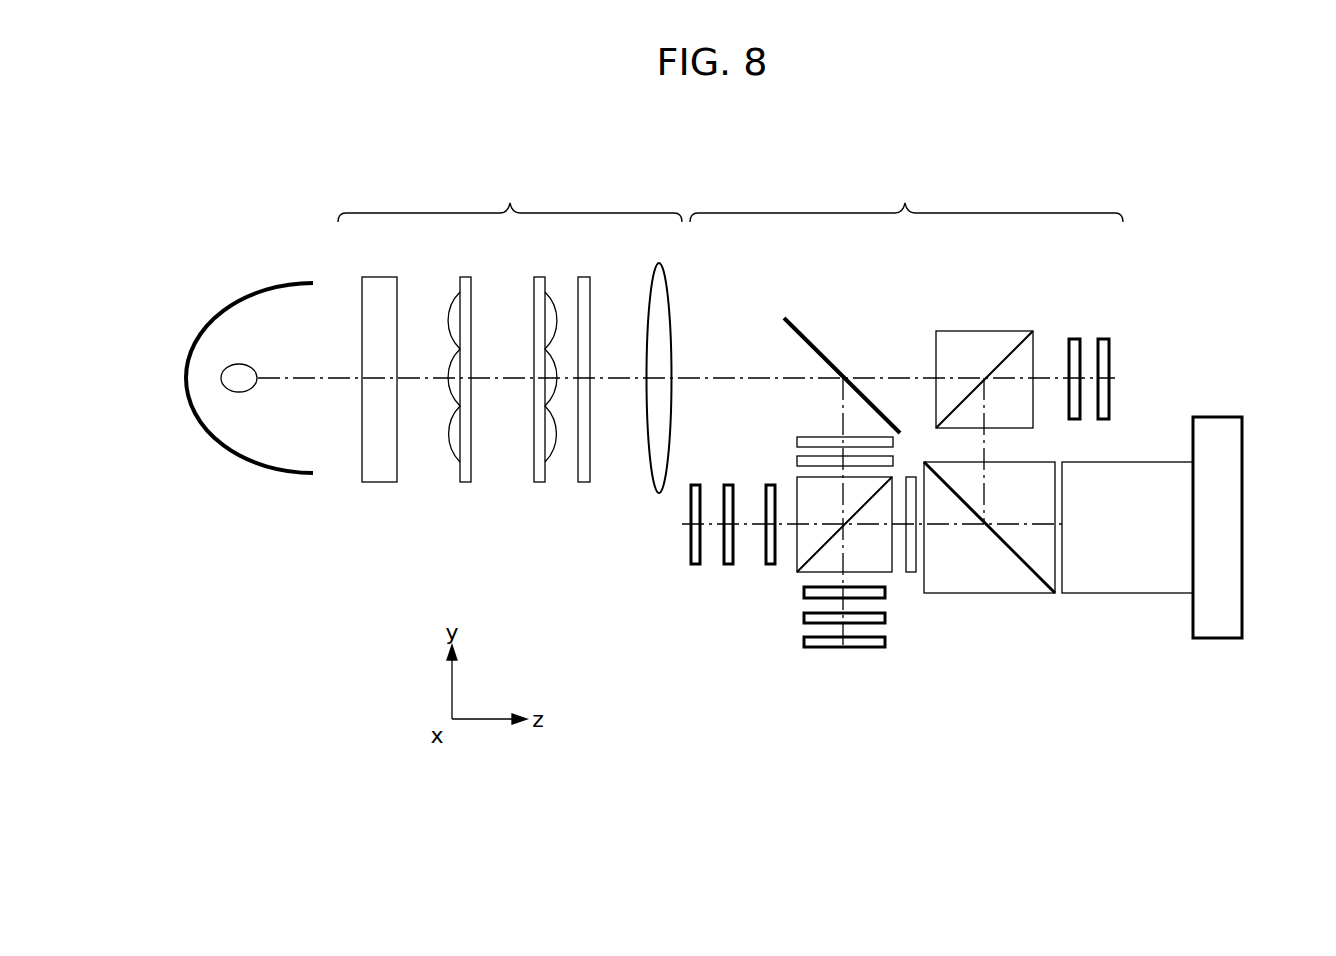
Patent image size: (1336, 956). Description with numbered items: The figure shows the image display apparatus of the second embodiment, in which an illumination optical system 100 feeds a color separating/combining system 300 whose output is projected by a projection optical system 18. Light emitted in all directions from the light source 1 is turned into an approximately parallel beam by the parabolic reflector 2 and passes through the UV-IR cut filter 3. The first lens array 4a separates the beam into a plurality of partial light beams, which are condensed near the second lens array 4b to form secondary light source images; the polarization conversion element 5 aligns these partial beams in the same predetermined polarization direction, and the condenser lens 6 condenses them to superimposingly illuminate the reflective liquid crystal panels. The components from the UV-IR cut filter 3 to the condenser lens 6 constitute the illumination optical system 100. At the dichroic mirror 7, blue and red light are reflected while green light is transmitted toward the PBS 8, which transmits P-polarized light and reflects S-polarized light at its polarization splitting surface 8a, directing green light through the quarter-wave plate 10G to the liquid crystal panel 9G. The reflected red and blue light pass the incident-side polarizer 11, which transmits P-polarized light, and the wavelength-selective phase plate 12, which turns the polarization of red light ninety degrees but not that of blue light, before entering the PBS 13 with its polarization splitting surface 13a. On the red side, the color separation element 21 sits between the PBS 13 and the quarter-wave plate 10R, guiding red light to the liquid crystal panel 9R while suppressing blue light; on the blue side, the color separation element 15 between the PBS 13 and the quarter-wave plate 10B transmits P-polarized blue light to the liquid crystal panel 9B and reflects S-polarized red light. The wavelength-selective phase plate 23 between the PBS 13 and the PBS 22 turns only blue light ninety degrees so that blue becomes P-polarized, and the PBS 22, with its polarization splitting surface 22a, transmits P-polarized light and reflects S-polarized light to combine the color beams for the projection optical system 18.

The light source 1 is at (218, 376).
The parabolic reflector 2 is at (263, 468).
The UV-IR cut filter 3 is at (380, 470).
The first lens array 4a is at (463, 470).
The second lens array 4b is at (537, 470).
The polarization conversion element 5 is at (585, 470).
The condenser lens 6 is at (655, 450).
The dichroic mirror 7 is at (811, 338).
The PBS 8 is at (1004, 330).
The polarization splitting surface 8a is at (990, 368).
The liquid crystal panel for red light 9R is at (689, 540).
The liquid crystal panel for green light 9G is at (1112, 398).
The liquid crystal panel for blue light 9B is at (857, 647).
The quarter-wave plate for red light 10R is at (726, 557).
The quarter-wave plate for green light 10G is at (1073, 338).
The quarter-wave plate for blue light 10B is at (876, 617).
The incident-side polarizer 11 is at (813, 440).
The wavelength-selective phase plate 12 is at (805, 461).
The PBS 13 is at (795, 490).
The polarization splitting surface 13a is at (810, 553).
The color separation element 15 is at (807, 597).
The projection optical system 18 is at (1132, 595).
The color separation element 21 is at (762, 552).
The PBS 22 is at (1032, 595).
The polarization splitting surface 22a is at (996, 540).
The wavelength-selective phase plate 23 is at (910, 567).
The illumination optical system 100 is at (510, 196).
The color separating/combining system 300 is at (906, 196).